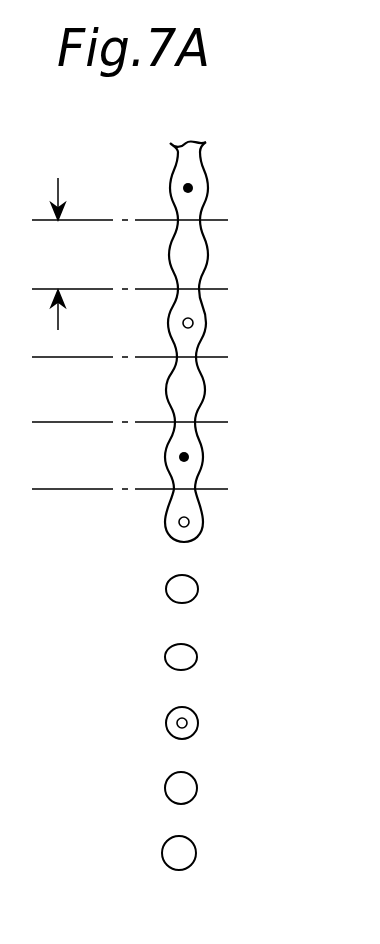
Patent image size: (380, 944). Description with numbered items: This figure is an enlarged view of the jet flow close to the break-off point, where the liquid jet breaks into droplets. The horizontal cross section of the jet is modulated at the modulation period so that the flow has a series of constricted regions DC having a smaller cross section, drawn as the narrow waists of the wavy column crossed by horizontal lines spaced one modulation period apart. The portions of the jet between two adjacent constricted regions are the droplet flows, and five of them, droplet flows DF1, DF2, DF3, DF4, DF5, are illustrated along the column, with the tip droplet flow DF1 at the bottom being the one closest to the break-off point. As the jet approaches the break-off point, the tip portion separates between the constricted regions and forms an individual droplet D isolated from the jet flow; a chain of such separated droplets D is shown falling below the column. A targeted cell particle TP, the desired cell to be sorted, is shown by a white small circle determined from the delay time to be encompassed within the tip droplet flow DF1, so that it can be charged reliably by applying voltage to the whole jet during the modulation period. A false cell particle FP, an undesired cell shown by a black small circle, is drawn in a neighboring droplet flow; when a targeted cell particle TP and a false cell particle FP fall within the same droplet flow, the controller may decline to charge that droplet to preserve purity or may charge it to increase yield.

The constricted region DC is at (213, 221).
The droplet flow DF5 is at (203, 258).
The droplet flow DF4 is at (203, 324).
The droplet flow DF3 is at (203, 390).
The droplet flow DF2 is at (203, 458).
The tip droplet flow DF1 is at (203, 520).
The false cell particle FP is at (180, 457).
The targeted cell particle TP is at (180, 522).
The droplet D is at (166, 590).